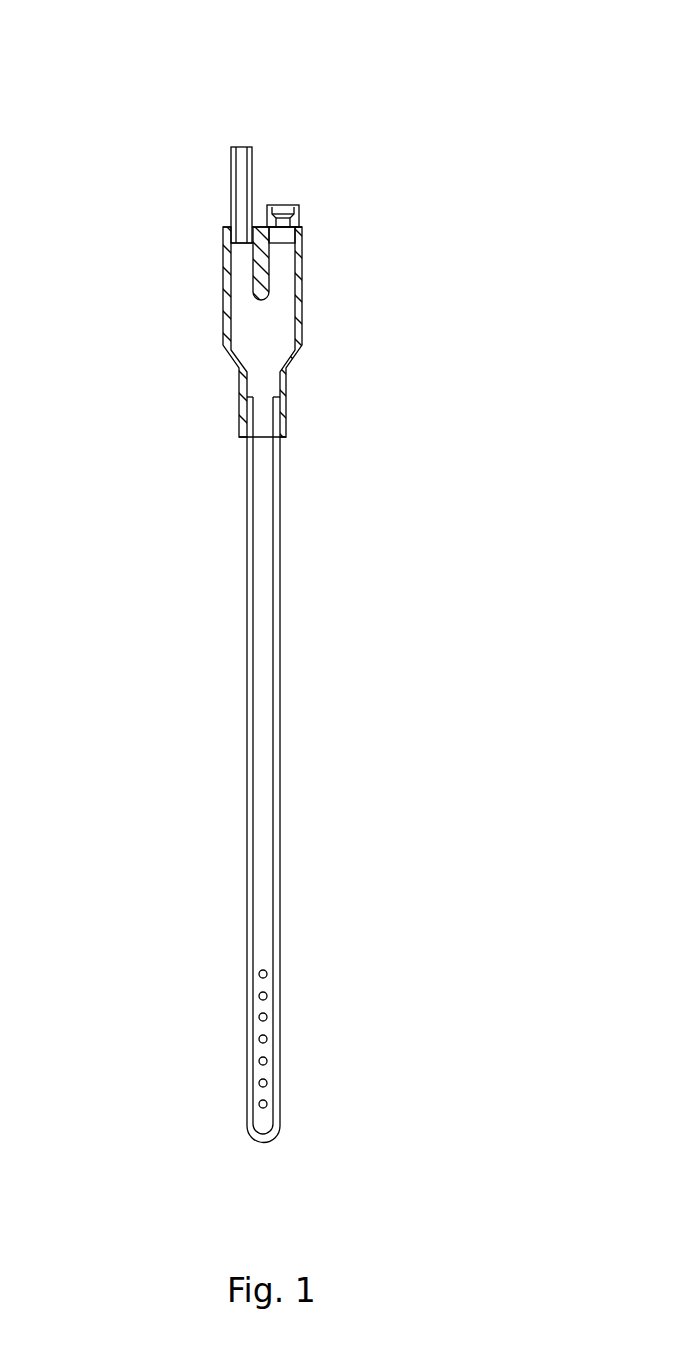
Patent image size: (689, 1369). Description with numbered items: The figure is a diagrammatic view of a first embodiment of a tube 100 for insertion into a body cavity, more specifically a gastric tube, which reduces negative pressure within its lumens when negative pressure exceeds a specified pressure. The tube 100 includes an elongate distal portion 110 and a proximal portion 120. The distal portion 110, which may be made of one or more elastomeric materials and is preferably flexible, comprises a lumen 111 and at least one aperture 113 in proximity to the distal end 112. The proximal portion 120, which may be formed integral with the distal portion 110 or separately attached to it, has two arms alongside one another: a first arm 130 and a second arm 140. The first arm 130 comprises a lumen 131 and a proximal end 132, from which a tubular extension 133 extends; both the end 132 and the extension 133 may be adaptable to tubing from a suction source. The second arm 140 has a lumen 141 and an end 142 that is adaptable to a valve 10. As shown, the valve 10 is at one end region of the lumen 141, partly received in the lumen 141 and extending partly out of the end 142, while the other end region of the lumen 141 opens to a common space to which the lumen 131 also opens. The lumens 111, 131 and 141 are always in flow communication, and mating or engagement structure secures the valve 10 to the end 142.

The tube 100 is at (295, 732).
The distal portion 110 is at (247, 750).
The lumen 111 is at (265, 808).
The distal end 112 is at (247, 1135).
The aperture 113 is at (259, 1062).
The proximal portion 120 is at (223, 317).
The first arm 130 is at (223, 278).
The lumen 131 is at (240, 263).
The proximal end 132 is at (223, 227).
The extension 133 is at (229, 165).
The second arm 140 is at (303, 282).
The lumen 141 is at (283, 270).
The end 142 is at (303, 237).
The valve 10 is at (283, 207).